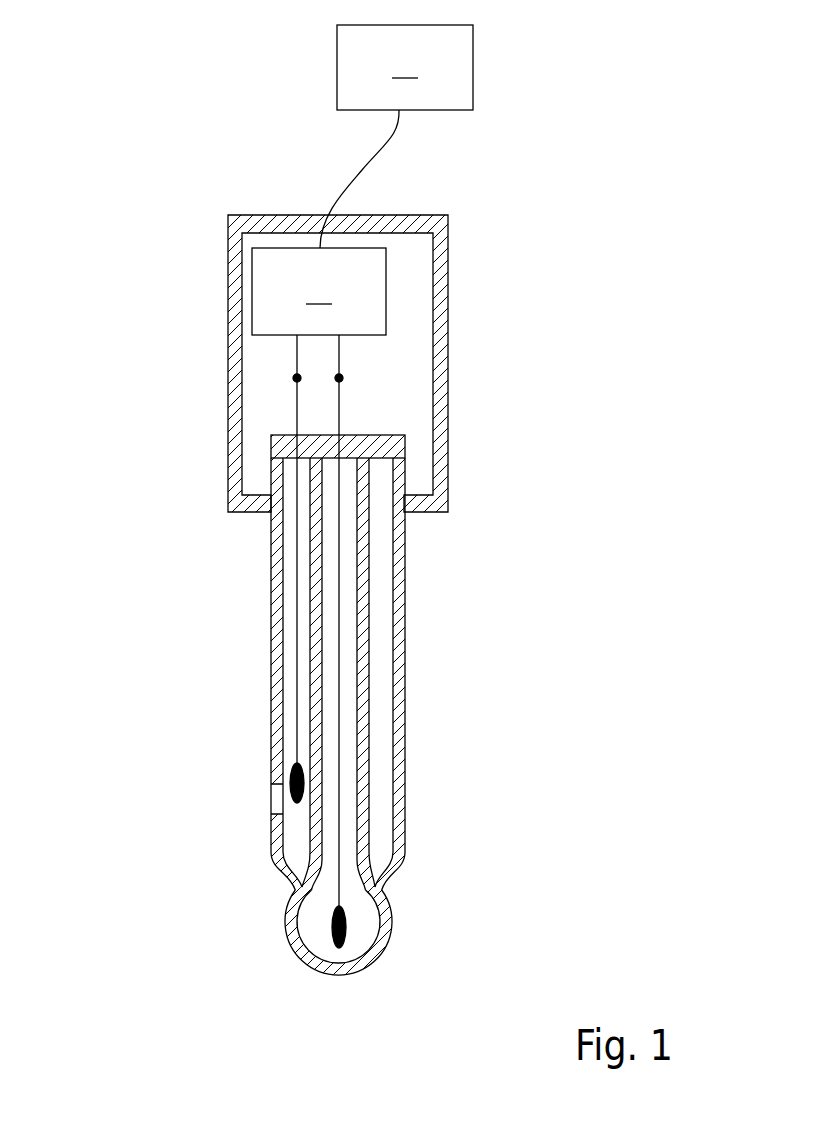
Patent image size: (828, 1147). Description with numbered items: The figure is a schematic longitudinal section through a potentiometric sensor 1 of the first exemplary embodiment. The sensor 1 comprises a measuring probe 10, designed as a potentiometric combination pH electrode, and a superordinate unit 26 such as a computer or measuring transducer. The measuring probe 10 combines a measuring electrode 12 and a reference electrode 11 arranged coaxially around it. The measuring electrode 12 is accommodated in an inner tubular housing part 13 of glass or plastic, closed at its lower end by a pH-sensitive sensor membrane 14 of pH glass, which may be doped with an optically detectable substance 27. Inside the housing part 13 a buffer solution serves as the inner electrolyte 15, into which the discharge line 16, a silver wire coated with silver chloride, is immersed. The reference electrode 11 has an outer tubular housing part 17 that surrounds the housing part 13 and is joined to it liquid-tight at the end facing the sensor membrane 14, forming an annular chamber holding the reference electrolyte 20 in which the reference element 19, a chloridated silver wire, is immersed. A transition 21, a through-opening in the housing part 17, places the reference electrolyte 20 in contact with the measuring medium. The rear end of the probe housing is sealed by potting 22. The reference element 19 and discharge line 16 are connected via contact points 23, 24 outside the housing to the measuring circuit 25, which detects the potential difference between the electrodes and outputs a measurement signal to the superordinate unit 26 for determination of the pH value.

The potentiometric sensor 1 is at (592, 204).
The measuring probe 10 is at (173, 338).
The reference electrode 11 is at (444, 792).
The measuring electrode 12 is at (395, 1000).
The inner tubular housing part 13 is at (365, 660).
The sensor membrane 14 is at (385, 941).
The inner electrolyte 15 is at (366, 918).
The discharge line 16 is at (341, 735).
The outer tubular housing part 17 is at (277, 563).
The reference element 19 is at (289, 765).
The reference electrolyte 20 is at (297, 850).
The transition 21 is at (275, 800).
The potting 22 is at (383, 445).
The contact point 23 is at (294, 379).
The contact point 24 is at (342, 377).
The measuring circuit 25 is at (319, 291).
The superordinate unit 26 is at (396, 136).
The optically detectable substance 27 is at (335, 966).